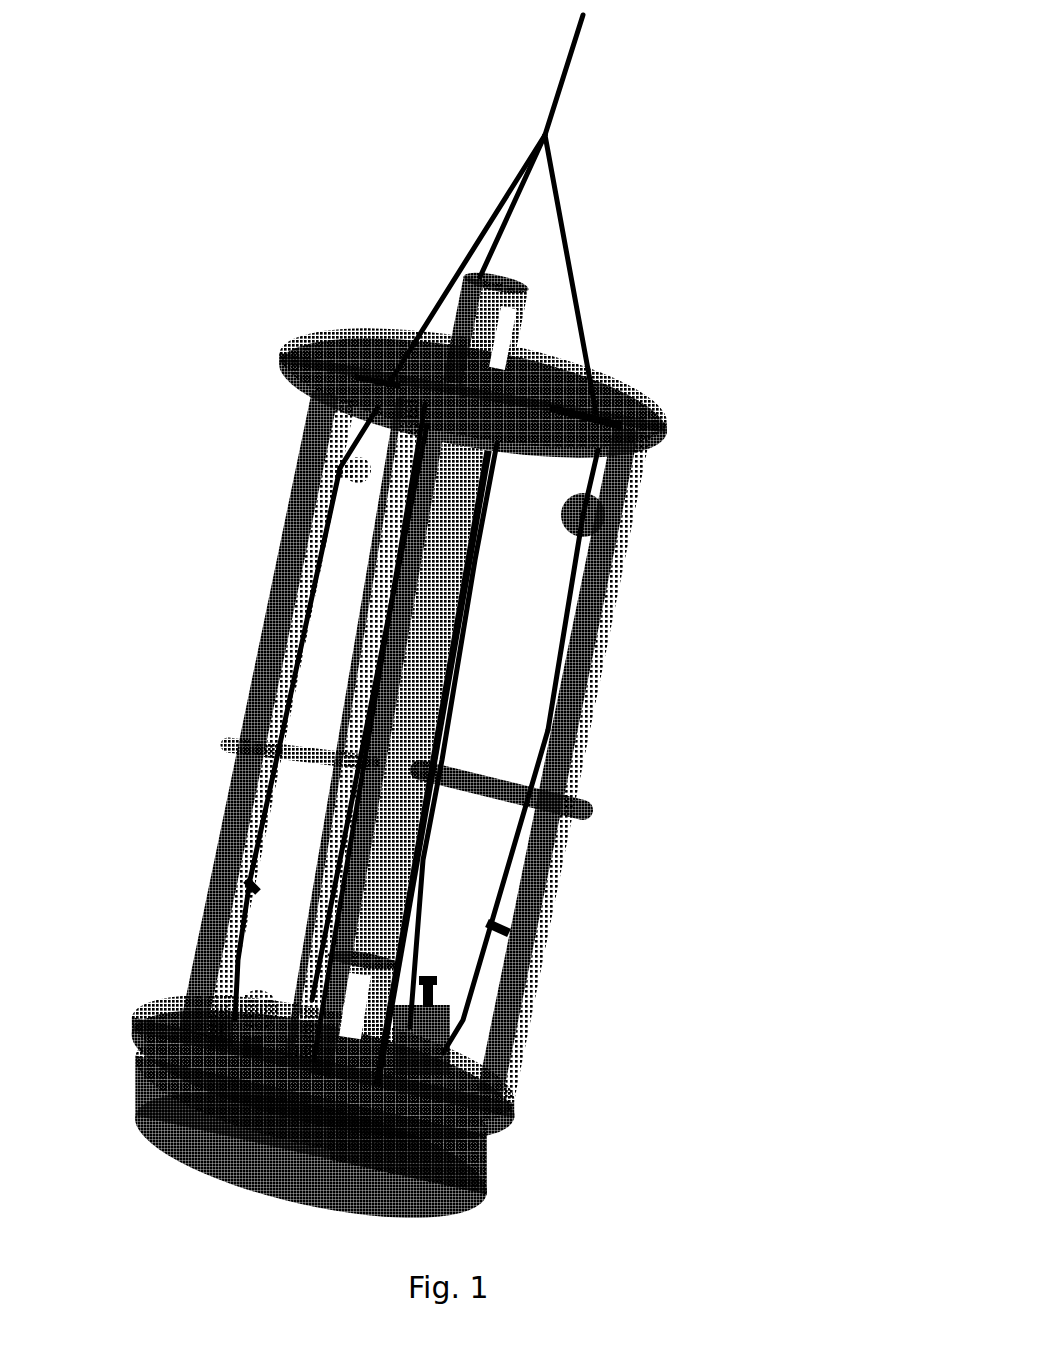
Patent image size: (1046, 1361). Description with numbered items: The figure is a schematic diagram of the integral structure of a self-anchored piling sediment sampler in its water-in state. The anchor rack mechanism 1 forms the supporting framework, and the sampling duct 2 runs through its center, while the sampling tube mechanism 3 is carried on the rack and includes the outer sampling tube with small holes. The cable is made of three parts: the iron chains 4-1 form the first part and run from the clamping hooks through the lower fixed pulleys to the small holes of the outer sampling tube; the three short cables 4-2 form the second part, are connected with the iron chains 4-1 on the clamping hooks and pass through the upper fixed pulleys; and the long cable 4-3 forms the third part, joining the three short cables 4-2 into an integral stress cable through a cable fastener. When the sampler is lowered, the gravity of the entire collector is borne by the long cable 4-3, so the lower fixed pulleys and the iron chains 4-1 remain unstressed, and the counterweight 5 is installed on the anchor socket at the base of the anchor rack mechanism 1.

The anchor rack mechanism 1 is at (467, 733).
The sampling duct 2 is at (289, 756).
The sampling tube mechanism 3 is at (636, 327).
The iron chain 4-1 is at (571, 902).
The short cables 4-2 is at (512, 726).
The long cable 4-3 is at (580, 265).
The counterweight 5 is at (395, 1134).